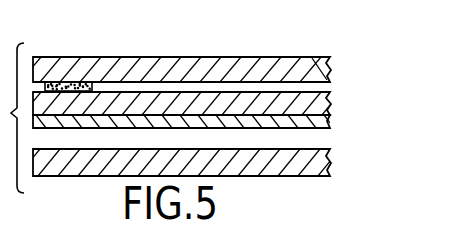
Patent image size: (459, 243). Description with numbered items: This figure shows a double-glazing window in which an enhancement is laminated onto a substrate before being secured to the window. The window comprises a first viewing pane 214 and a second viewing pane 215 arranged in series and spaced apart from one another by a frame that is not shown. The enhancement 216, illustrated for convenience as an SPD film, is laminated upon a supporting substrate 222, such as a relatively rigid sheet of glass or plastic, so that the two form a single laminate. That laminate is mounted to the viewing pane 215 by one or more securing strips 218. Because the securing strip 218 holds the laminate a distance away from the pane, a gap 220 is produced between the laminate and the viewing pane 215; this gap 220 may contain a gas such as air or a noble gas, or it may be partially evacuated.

The first viewing pane 214 is at (324, 166).
The second viewing pane 215 is at (321, 61).
The enhancement 216 is at (55, 118).
The securing strip 218 is at (62, 82).
The gap 220 is at (172, 88).
The supporting substrate 222 is at (322, 106).